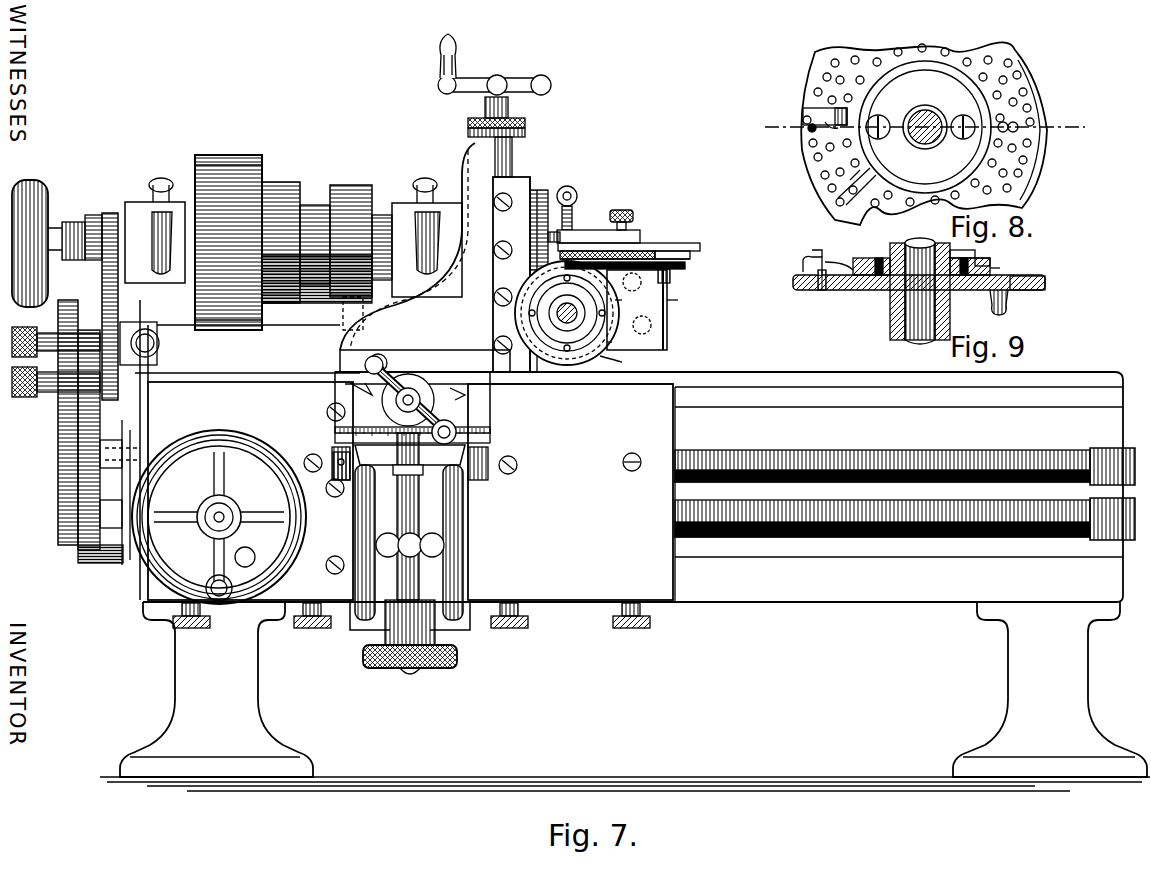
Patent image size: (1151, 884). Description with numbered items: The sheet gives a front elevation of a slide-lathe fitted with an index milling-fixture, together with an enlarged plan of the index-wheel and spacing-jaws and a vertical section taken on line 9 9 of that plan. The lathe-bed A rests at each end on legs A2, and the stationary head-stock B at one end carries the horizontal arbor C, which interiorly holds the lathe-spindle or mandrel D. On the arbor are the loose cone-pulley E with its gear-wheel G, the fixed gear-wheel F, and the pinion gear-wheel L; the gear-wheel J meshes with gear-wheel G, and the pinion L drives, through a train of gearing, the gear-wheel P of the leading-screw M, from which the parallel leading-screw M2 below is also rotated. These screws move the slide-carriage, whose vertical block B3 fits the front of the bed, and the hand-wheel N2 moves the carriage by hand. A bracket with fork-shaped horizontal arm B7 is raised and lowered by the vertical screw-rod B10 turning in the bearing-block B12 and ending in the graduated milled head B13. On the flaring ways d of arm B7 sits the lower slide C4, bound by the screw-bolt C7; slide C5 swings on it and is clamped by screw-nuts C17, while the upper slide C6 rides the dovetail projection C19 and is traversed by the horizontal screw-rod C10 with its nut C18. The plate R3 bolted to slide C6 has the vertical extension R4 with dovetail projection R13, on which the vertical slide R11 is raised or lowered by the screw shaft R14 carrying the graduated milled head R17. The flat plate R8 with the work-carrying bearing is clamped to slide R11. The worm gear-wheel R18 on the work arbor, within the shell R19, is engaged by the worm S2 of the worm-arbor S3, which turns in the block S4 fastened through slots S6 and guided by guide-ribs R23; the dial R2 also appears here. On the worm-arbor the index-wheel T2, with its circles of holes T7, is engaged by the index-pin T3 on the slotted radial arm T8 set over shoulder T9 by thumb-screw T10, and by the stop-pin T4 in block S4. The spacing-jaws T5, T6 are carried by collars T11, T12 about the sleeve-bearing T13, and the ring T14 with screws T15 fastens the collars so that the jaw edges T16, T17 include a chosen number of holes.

In FIG. 7, the lathe-bed A is at (633, 487).
In FIG. 7, the legs A2 is at (633, 689).
In FIG. 7, the leading-screw M is at (800, 457).
In FIG. 7, the parallel leading-screw M2 is at (838, 507).
In FIG. 7, the head-stock B is at (142, 200).
In FIG. 7, the vertical plate or block B3 is at (404, 450).
In FIG. 7, the horizontal arm or table B7 is at (410, 455).
In FIG. 7, the vertical screw-rod B10 is at (435, 600).
In FIG. 7, the horizontal bearing-block B12 is at (410, 622).
In FIG. 7, the milled head B13 is at (457, 657).
In FIG. 7, the horizontal arbor C is at (82, 246).
In FIG. 7, the lower slide C4 is at (490, 432).
In FIG. 7, the middle slide C5 is at (490, 410).
In FIG. 7, the upper slide C6 is at (490, 388).
In FIG. 7, the screw-bolt C7 is at (420, 452).
In FIG. 7, the horizontal screw-rod C10 is at (420, 393).
In FIG. 7, the screw-nuts C17 is at (332, 472).
In FIG. 7, the nut C18 is at (420, 510).
In FIG. 7, the dovetail projection C19 is at (469, 392).
In FIG. 7, the lathe-spindle or mandrel D is at (39, 243).
In FIG. 7, the flaring ways d is at (332, 447).
In FIG. 7, the cone-pulley E is at (296, 242).
In FIG. 7, the gear-wheel F is at (208, 153).
In FIG. 7, the gear-wheel G is at (356, 205).
In FIG. 7, the gear-wheel J is at (385, 290).
In FIG. 7, the pinion gear-wheel L is at (110, 213).
In FIG. 7, the hand-wheel N2 is at (296, 517).
In FIG. 7, the gear-wheel of leading-screw P is at (58, 440).
In FIG. 7, the graduated dial R2 is at (588, 318).
In FIG. 7, the plate R3 is at (425, 361).
In FIG. 7, the vertical extension R4 is at (413, 246).
In FIG. 7, the flat plate R8 is at (548, 192).
In FIG. 7, the vertical slide R11 is at (515, 274).
In FIG. 7, the dovetail projection R13 is at (512, 160).
In FIG. 7, the vertical screw shaft R14 is at (508, 103).
In FIG. 7, the milled head R17 is at (525, 124).
In FIG. 7, the worm gear-wheel R18 is at (612, 343).
In FIG. 7, the shell R19 is at (621, 362).
In FIG. 7, the guide-ribs R23 is at (667, 353).
In FIG. 7, the worm S2 is at (628, 281).
In FIG. 8, the worm-arbor S3 is at (937, 115).
In FIG. 9, the worm-arbor S3 is at (920, 291).
In FIG. 7, the block S4 is at (625, 306).
In FIG. 7, the slots S6 is at (645, 321).
In FIG. 7, the index-wheel T2 is at (685, 266).
In FIG. 8, the index-wheel T2 is at (1010, 88).
In FIG. 9, the index-wheel T2 is at (862, 290).
In FIG. 7, the index-pin T3 is at (577, 190).
In FIG. 8, the index-pin T3 is at (805, 130).
In FIG. 9, the index-pin T3 is at (803, 262).
In FIG. 7, the stop-pin T4 is at (672, 278).
In FIG. 8, the stop-pin T4 is at (1006, 135).
In FIG. 9, the stop-pin T4 is at (1010, 305).
In FIG. 8, the spacing-jaw T5 is at (861, 189).
In FIG. 8, the spacing-jaw T6 is at (825, 115).
In FIG. 9, the spacing-jaw T6 is at (830, 262).
In FIG. 8, the holes or sockets T7 is at (922, 48).
In FIG. 9, the holes or sockets T7 is at (822, 290).
In FIG. 7, the radial arm T8 is at (583, 230).
In FIG. 7, the shoulder T9 is at (660, 246).
In FIG. 7, the thumb-screw T10 is at (633, 216).
In FIG. 7, the collar T11 is at (690, 256).
In FIG. 9, the collar T11 is at (858, 258).
In FIG. 7, the collar T12 is at (690, 262).
In FIG. 9, the collar T12 is at (1000, 272).
In FIG. 8, the sleeve-bearing T13 is at (885, 132).
In FIG. 9, the sleeve-bearing T13 is at (950, 243).
In FIG. 7, the ring T14 is at (655, 254).
In FIG. 8, the ring T14 is at (925, 127).
In FIG. 9, the ring T14 is at (990, 258).
In FIG. 8, the screws T15 is at (963, 139).
In FIG. 9, the screws T15 is at (880, 258).
In FIG. 8, the jaw edge T16 is at (865, 178).
In FIG. 8, the jaw edge T17 is at (832, 135).
In FIG. 8, the section line 9 is at (924, 127).